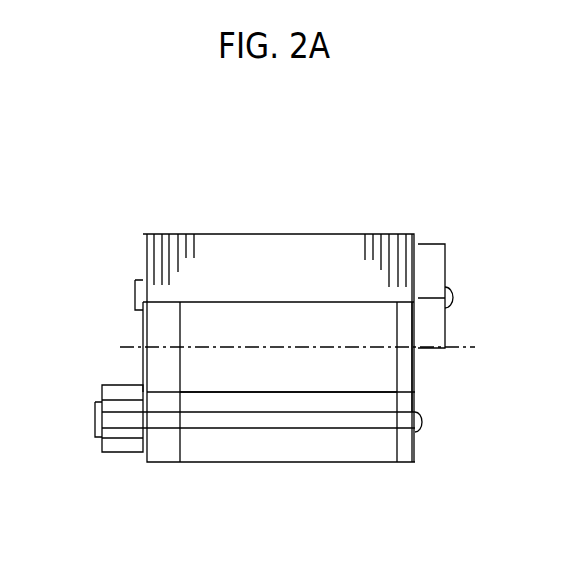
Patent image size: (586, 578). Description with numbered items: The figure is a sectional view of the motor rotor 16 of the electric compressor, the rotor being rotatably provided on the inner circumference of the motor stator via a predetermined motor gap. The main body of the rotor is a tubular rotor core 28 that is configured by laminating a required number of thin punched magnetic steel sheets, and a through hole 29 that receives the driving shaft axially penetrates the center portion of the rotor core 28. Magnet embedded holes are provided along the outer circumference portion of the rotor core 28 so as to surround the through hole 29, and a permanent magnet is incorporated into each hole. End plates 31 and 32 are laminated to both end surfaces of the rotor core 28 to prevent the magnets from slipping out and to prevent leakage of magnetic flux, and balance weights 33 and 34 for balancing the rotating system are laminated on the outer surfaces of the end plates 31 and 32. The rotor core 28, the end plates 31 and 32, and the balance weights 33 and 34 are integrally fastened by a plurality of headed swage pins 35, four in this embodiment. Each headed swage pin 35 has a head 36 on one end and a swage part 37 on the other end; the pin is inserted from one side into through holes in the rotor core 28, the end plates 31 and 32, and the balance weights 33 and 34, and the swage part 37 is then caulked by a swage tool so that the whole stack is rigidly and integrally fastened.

The motor rotor 16 is at (233, 215).
The rotor core 28 is at (327, 260).
The through hole 29 is at (312, 375).
The end plate 31 is at (143, 325).
The end plate 32 is at (418, 373).
The balance weight 33 is at (122, 445).
The balance weight 34 is at (432, 260).
The headed swage pin 35 is at (232, 418).
The head 36 is at (136, 295).
The swage part 37 is at (455, 296).